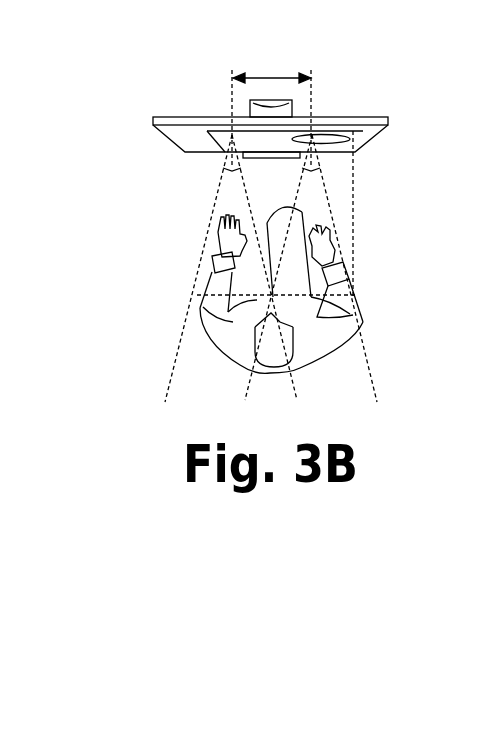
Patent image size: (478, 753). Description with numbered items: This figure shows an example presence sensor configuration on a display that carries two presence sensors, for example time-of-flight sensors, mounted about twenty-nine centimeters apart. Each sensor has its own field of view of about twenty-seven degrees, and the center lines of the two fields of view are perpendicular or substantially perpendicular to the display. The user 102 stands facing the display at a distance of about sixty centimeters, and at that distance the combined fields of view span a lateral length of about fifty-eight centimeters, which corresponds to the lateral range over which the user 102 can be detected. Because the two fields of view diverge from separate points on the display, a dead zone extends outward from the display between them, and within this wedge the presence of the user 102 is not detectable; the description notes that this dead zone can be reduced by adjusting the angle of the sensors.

The user 102 is at (322, 362).